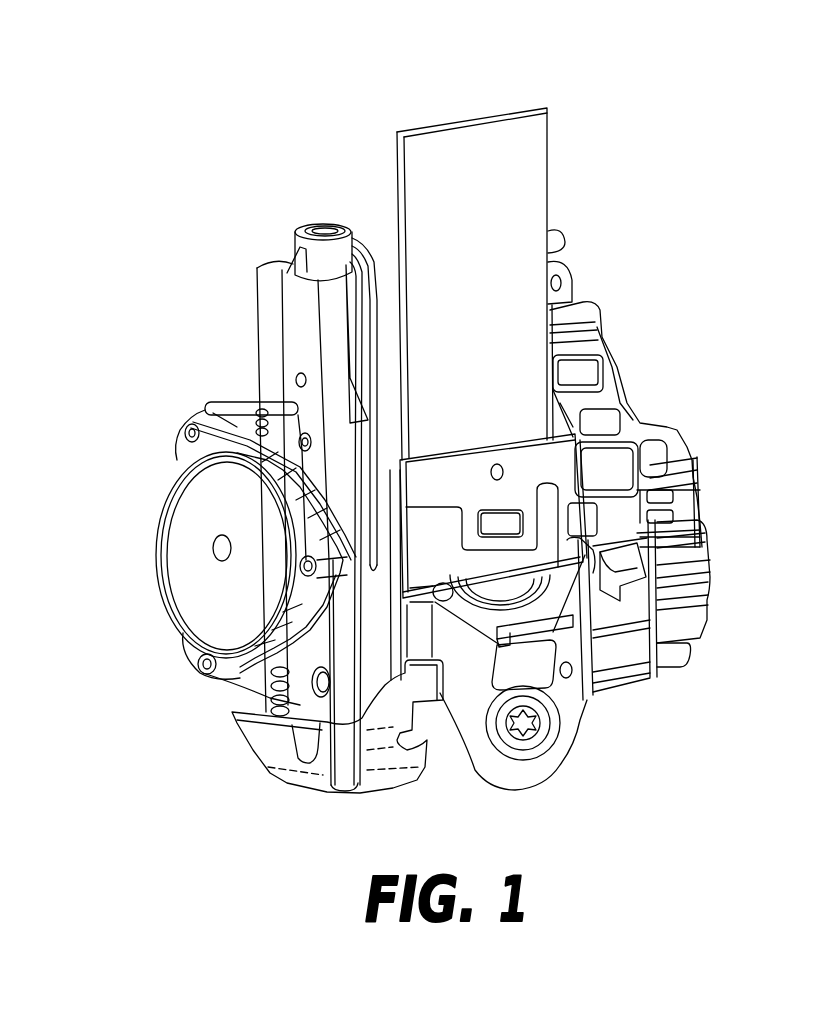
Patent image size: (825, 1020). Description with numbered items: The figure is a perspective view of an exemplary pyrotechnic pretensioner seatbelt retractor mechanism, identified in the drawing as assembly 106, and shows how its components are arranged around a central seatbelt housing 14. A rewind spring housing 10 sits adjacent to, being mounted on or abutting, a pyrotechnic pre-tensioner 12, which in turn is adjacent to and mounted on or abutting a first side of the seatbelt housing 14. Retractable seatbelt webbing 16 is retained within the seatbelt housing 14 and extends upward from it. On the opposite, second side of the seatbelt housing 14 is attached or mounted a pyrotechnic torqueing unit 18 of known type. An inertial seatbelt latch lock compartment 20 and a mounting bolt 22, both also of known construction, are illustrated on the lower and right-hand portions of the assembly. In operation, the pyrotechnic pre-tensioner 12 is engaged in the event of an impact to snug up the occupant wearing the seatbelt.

The window regulator assembly 106 is at (656, 129).
The rewind spring housing 10 is at (170, 600).
The pyrotechnic pre-tensioner 12 is at (257, 277).
The seatbelt housing 14 is at (470, 747).
The retractable seatbelt webbing 16 is at (549, 143).
The pyrotechnic torqueing unit 18 is at (600, 330).
The inertial seatbelt latch lock compartment 20 is at (695, 480).
The mounting bolt 22 is at (543, 748).